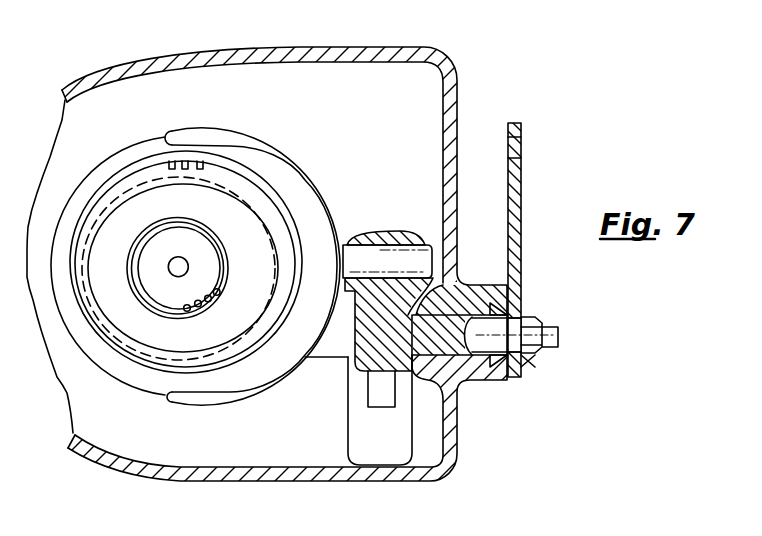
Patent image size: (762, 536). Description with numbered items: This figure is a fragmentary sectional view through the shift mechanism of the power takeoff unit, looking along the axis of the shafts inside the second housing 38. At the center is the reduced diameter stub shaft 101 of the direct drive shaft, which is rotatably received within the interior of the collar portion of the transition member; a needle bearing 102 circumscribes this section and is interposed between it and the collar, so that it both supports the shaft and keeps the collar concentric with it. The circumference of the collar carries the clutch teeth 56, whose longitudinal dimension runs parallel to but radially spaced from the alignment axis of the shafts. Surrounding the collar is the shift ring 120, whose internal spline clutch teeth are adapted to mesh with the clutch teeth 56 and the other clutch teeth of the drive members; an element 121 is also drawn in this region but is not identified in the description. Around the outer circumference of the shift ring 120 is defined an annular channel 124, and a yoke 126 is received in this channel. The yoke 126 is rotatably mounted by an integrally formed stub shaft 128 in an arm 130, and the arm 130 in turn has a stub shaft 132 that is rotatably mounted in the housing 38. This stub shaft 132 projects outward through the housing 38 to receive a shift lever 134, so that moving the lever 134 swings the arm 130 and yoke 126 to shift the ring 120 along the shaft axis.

The second housing 38 is at (458, 168).
The clutch teeth 56 is at (170, 166).
The reduced diameter stub shaft 101 is at (160, 280).
The needle bearing 102 is at (193, 312).
The shift ring 120 is at (103, 158).
The teeth 121 is at (199, 162).
The annular channel 124 is at (143, 147).
The yoke 126 is at (253, 153).
The stub shaft 128 is at (353, 260).
The arm 130 is at (405, 232).
The stub shaft 132 is at (520, 353).
The shift lever 134 is at (522, 192).